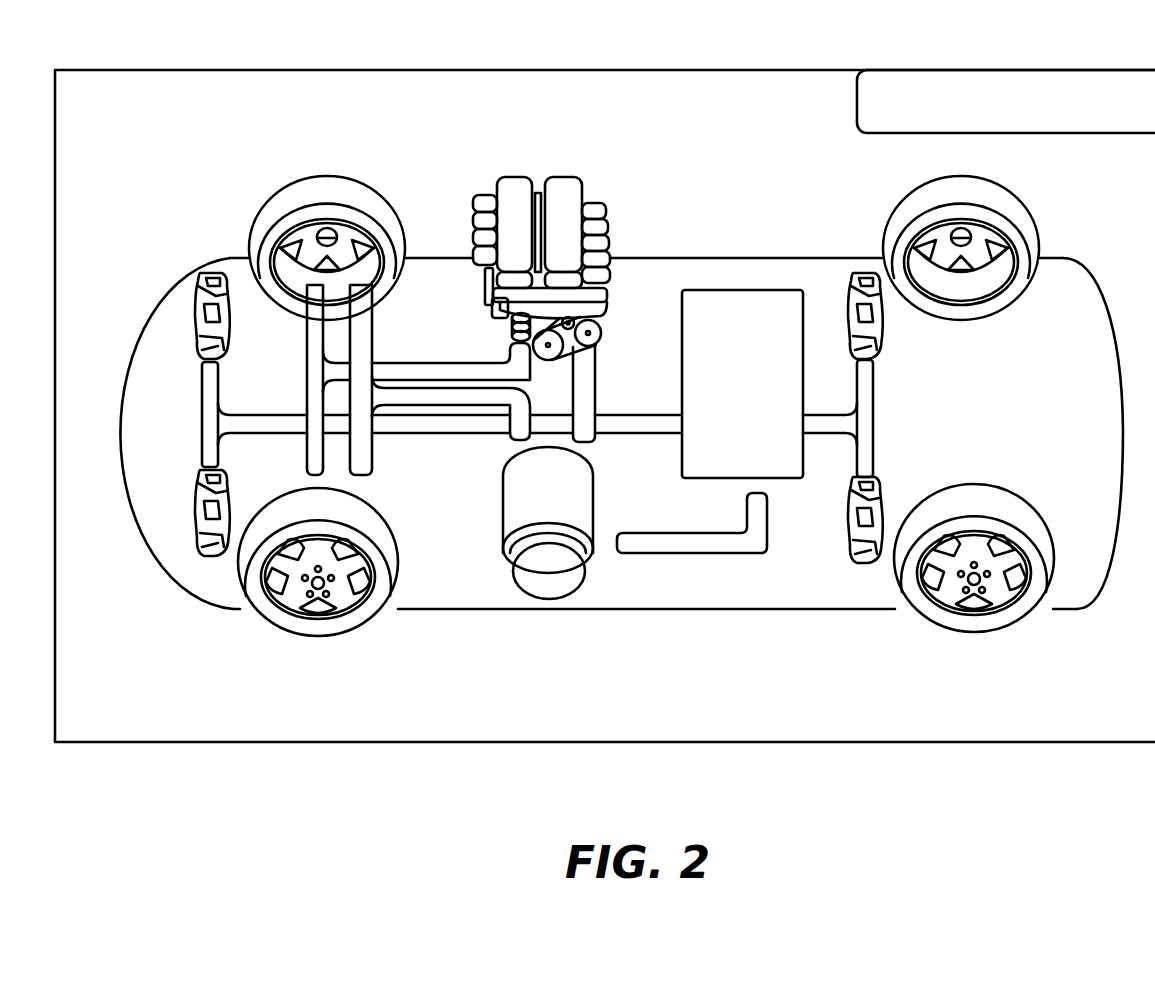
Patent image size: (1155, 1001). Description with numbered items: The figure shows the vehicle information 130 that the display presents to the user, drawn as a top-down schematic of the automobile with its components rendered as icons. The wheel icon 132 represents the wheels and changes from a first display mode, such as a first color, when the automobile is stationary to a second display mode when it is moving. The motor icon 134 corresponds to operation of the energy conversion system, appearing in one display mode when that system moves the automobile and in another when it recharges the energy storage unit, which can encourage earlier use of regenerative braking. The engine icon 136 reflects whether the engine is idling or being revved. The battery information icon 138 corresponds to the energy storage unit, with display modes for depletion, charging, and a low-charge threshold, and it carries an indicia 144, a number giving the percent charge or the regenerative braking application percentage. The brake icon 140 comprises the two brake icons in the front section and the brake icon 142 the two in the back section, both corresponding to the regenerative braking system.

The vehicle information 130 is at (620, 68).
The wheel icon 132 is at (319, 637).
The motor icon 134 is at (552, 592).
The engine icon 136 is at (524, 178).
The battery information icon 138 is at (724, 344).
The brake icon 140 is at (205, 270).
The brake icon 142 is at (860, 272).
The indicia 144 is at (716, 350).